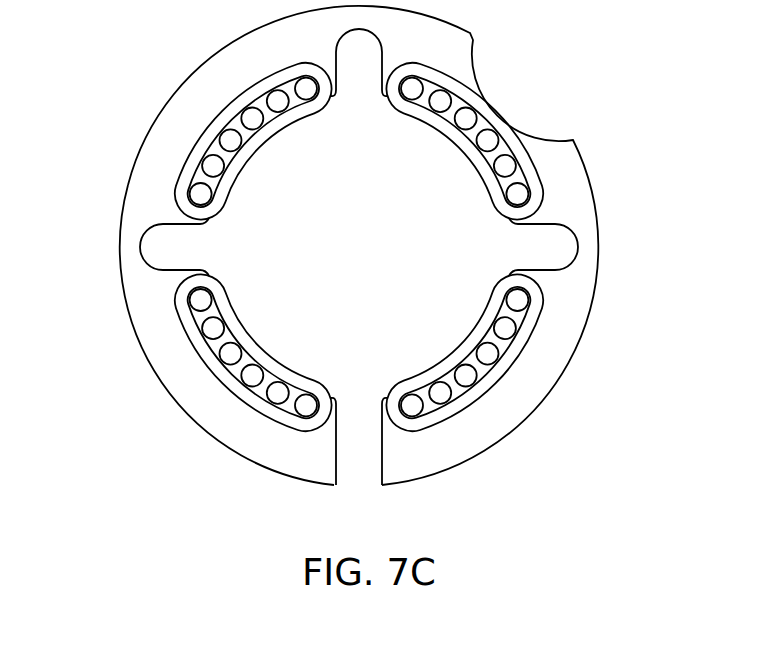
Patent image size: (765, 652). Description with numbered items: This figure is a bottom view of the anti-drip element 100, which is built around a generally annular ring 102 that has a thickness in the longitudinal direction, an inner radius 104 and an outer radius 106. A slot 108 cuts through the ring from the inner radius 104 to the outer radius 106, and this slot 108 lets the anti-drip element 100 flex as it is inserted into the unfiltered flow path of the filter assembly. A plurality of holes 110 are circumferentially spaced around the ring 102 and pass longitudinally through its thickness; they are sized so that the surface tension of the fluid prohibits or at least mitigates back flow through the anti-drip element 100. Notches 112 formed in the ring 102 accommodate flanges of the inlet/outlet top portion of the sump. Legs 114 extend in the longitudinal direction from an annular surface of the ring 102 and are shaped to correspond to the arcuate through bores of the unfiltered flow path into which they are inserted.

The anti-drip element 100 is at (134, 81).
The annular ring 102 is at (567, 333).
The inner radius 104 is at (256, 144).
The outer radius 106 is at (122, 207).
The slot 108 is at (380, 452).
The holes 110 is at (248, 370).
The notches 112 is at (374, 78).
The legs 114 is at (290, 119).